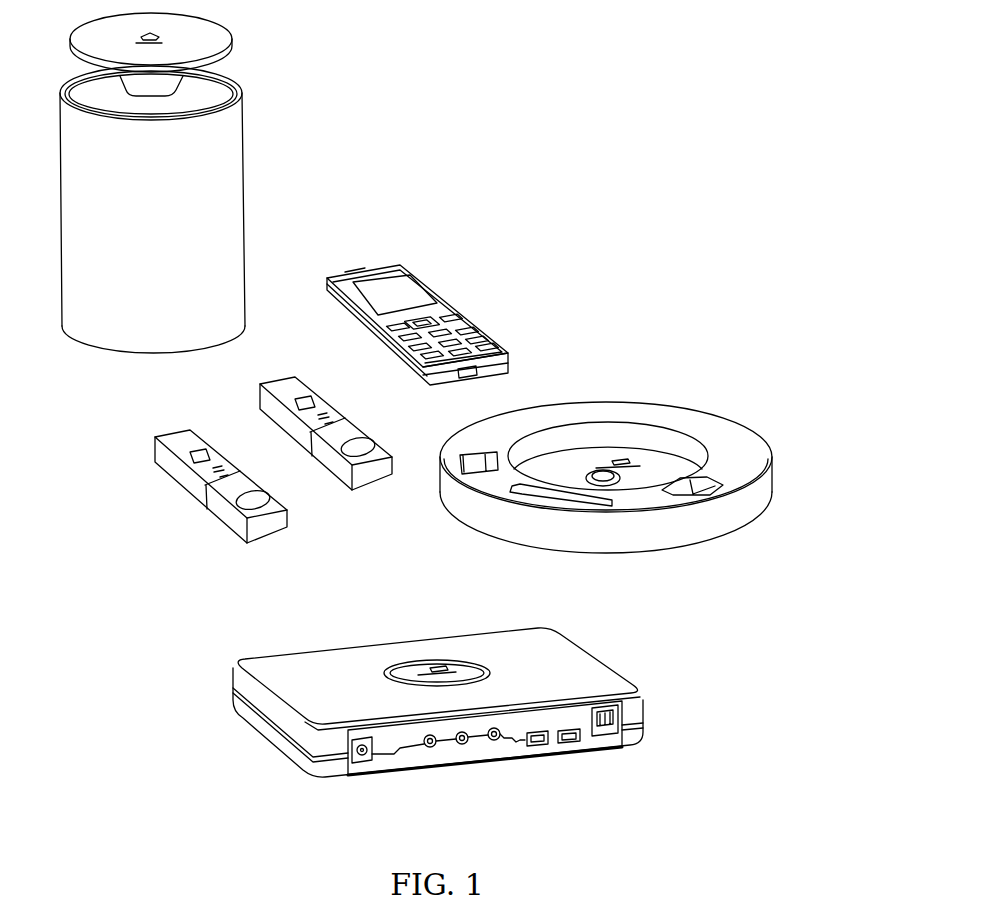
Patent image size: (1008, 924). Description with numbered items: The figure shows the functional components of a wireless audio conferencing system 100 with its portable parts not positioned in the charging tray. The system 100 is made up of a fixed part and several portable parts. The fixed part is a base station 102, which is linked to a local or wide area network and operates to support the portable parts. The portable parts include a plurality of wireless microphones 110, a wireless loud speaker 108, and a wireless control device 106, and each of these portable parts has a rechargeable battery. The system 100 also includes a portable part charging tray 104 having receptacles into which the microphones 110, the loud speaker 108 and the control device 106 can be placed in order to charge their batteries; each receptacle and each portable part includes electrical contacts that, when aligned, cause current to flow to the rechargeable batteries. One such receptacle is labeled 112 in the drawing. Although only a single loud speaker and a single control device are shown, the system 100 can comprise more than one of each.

The wireless audio conferencing system 100 is at (668, 80).
The base station 102 is at (603, 668).
The portable part charging tray 104 is at (639, 474).
The wireless control device 106 is at (467, 318).
The wireless loud speaker 108 is at (232, 160).
The wireless microphones 110 is at (280, 531).
The slot in charging base 112 is at (732, 487).